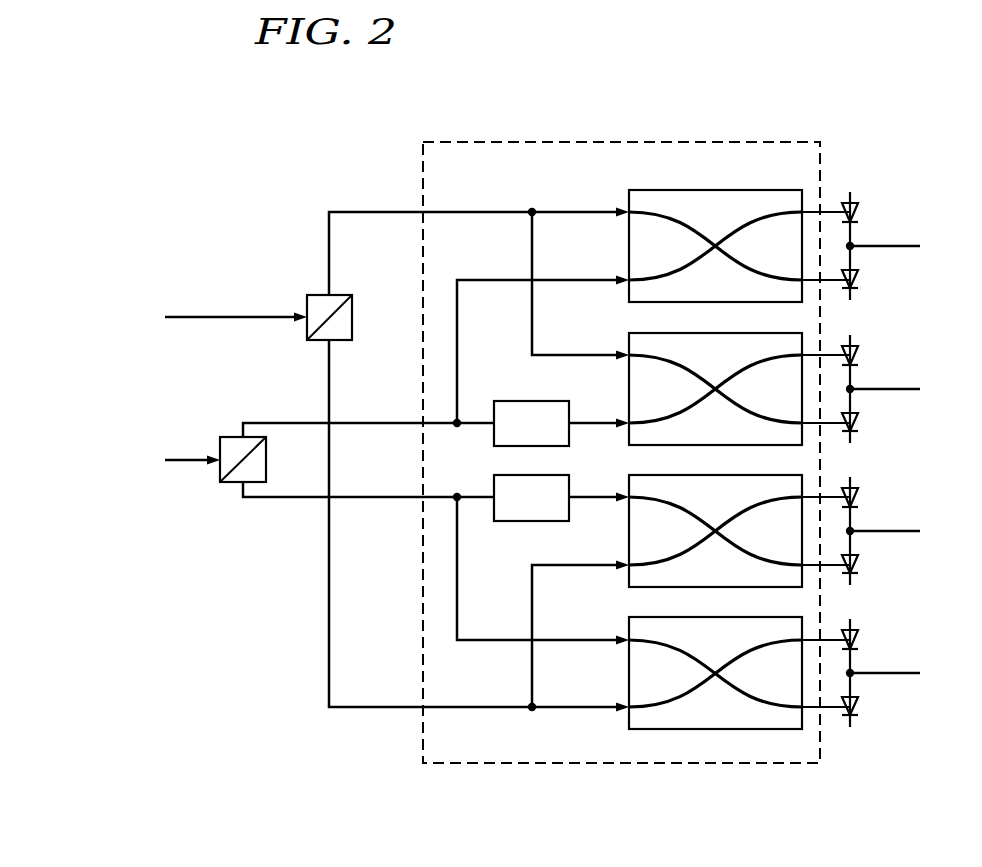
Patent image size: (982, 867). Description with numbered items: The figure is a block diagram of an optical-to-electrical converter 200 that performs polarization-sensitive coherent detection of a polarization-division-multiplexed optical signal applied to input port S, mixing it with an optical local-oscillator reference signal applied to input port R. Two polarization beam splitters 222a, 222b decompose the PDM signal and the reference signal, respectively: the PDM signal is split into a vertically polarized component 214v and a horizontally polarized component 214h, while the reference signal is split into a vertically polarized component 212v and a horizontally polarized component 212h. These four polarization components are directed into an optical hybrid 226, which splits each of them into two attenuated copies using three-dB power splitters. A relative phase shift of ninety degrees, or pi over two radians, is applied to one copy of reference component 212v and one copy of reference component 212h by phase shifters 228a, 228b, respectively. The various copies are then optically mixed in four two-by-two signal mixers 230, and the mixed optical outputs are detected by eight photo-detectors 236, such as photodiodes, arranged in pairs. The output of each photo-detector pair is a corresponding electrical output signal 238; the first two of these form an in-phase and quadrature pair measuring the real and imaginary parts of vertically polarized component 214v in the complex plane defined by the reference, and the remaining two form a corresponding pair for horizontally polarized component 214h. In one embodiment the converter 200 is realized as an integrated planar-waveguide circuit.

The optical-to-electrical (O/E) converter 200 is at (344, 92).
The vertically polarized component of the reference signal 212v is at (380, 423).
The horizontally polarized component of the reference signal 212h is at (380, 497).
The vertically polarized component of the PDM signal 214v is at (378, 212).
The horizontally polarized component of the PDM signal 214h is at (378, 707).
The polarization beam splitter 222a is at (305, 338).
The polarization beam splitter 222b is at (222, 483).
The optical hybrid 226 is at (617, 142).
The phase shifter 228a is at (523, 401).
The phase shifter 228b is at (520, 521).
The 2×2 signal mixer 230 is at (697, 221).
The photo-detector 236 is at (853, 158).
The electrical output signal 238 is at (868, 246).